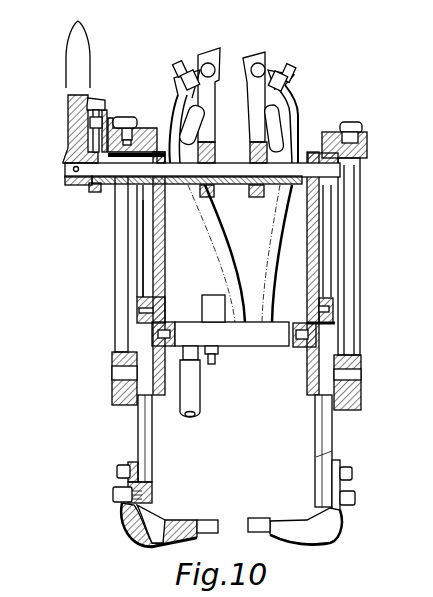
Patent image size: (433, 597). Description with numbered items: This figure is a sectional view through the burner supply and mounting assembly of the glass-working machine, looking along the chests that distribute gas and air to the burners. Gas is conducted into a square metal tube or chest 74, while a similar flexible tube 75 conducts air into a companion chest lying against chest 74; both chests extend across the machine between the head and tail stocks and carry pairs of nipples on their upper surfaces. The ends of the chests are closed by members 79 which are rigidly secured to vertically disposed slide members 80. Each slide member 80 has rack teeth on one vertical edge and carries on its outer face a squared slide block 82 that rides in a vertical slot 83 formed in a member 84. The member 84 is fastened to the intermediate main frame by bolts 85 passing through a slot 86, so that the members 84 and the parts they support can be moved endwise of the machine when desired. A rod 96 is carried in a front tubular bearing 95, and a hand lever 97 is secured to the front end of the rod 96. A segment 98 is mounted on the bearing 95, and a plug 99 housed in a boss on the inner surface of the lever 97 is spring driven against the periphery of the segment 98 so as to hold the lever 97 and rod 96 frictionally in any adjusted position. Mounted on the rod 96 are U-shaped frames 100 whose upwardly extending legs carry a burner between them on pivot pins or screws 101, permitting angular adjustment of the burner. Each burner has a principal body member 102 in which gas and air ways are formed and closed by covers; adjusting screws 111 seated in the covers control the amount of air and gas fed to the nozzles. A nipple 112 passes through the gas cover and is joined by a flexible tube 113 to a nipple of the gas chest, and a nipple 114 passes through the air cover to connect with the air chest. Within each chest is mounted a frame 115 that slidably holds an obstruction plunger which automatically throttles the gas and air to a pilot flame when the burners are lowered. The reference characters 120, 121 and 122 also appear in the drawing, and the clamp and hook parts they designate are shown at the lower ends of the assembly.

The gas chest 74 is at (232, 334).
The flexible tube 75 is at (200, 396).
The closing members 79 is at (166, 328).
The slide members 80 is at (166, 261).
The slide block 82 is at (138, 302).
The vertical slot 83 is at (147, 248).
The supporting member 84 is at (152, 456).
The bolts 85 is at (128, 117).
The slot 86 is at (141, 131).
The front tubular bearing 95 is at (96, 193).
The rod 96 is at (63, 170).
The hand lever 97 is at (68, 121).
The segment 98 is at (105, 124).
The plug 99 is at (91, 115).
The U-shaped frame 100 is at (255, 102).
The pivot pins or screws 101 is at (215, 63).
The burner body member 102 is at (268, 54).
The adjusting screws 111 is at (294, 70).
The gas nipple 112 is at (178, 87).
The flexible tube 113 is at (275, 227).
The air nipple 114 is at (268, 117).
The frame 115 is at (222, 295).
The screw 120 is at (218, 362).
The hook 121 is at (253, 519).
The hook 122 is at (125, 532).